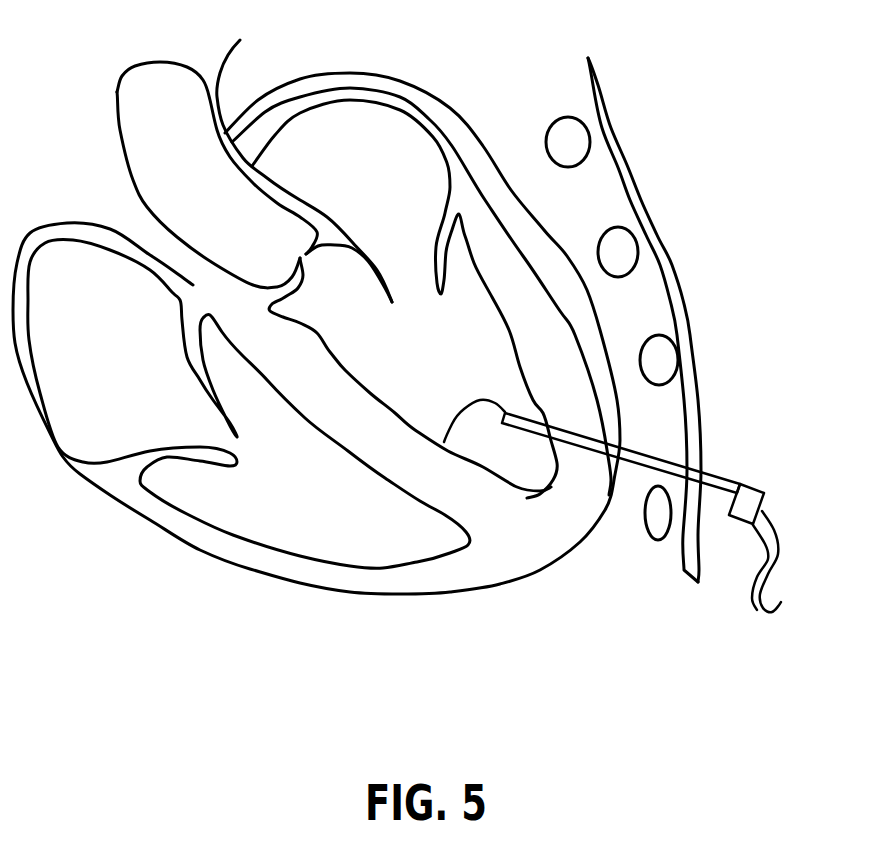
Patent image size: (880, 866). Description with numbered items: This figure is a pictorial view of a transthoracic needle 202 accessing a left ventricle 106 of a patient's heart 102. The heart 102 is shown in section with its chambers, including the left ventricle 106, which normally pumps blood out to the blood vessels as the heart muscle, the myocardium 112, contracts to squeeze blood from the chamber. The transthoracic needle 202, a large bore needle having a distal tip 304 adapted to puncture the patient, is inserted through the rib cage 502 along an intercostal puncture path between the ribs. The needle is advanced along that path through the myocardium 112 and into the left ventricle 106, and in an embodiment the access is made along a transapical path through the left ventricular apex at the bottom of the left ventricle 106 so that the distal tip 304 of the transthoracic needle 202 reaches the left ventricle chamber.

The heart 102 is at (229, 550).
The left ventricle 106 is at (507, 468).
The myocardium 112 is at (578, 507).
The transthoracic needle 202 is at (652, 465).
The distal tip 304 is at (450, 428).
The rib cage 502 is at (657, 355).